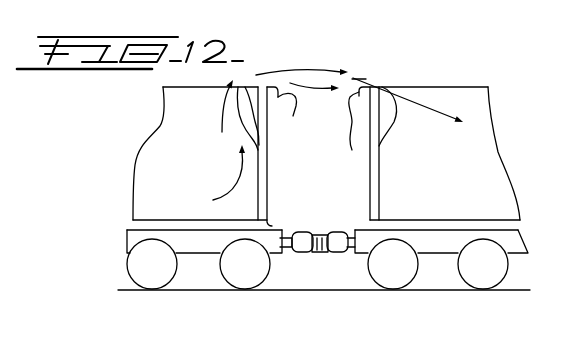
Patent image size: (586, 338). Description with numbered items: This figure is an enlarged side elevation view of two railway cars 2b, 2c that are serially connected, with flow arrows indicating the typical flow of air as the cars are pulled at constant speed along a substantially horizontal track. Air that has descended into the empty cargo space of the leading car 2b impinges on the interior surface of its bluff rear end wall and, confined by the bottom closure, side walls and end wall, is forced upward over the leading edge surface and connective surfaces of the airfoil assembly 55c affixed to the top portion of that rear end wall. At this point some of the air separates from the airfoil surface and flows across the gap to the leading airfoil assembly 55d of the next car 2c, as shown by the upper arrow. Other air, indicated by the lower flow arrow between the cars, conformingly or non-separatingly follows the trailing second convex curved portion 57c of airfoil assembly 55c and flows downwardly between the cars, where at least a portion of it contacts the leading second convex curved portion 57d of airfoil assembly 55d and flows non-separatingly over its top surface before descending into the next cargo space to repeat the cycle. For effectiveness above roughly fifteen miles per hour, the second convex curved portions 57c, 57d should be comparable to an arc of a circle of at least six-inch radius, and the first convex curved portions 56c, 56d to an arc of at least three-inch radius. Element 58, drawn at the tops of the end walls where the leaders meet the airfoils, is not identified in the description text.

The car 2b is at (158, 118).
The next car 2c is at (497, 118).
The end partition plate between cars 58 is at (262, 87).
The airfoil assembly 55c is at (286, 63).
The airfoil assembly 55d is at (372, 70).
The first convex curved portion 56c is at (238, 124).
The first convex curved portion 56d is at (398, 104).
The second convex curved portion 57c is at (301, 118).
The second convex curved portion 57d is at (352, 150).